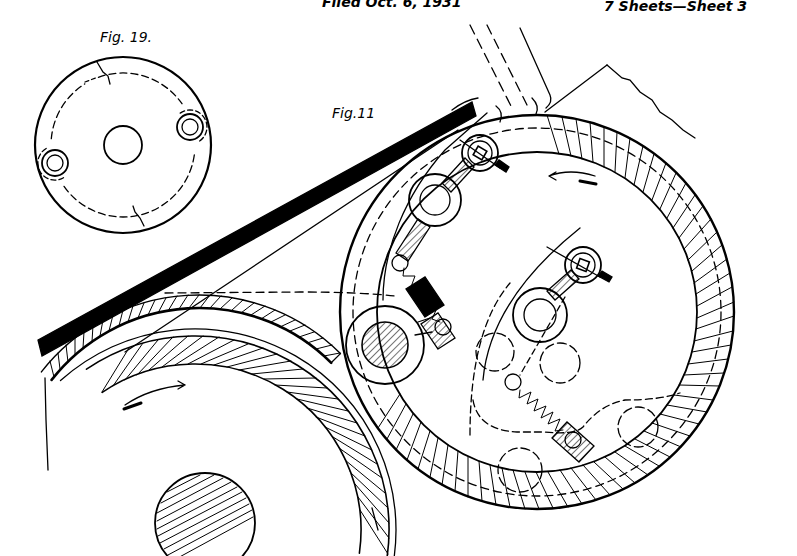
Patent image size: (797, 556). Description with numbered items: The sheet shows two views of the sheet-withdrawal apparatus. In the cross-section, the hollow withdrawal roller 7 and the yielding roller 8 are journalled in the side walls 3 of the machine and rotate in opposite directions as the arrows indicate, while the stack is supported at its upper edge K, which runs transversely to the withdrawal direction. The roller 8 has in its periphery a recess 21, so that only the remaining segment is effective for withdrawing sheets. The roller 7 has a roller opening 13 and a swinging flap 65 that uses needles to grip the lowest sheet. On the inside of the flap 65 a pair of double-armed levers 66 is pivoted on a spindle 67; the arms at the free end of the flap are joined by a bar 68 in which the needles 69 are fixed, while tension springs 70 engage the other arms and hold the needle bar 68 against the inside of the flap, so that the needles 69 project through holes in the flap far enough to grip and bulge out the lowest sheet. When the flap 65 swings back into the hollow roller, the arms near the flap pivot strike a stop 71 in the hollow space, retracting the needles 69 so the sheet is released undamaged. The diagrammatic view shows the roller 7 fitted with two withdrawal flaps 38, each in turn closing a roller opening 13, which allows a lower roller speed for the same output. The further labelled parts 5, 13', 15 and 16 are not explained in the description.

In FIG. 11, the side walls of the machine 3 is at (656, 110).
In FIG. 11, the support plate 5 is at (541, 94).
In FIG. 19, the withdrawal roller 7 is at (180, 89).
In FIG. 11, the withdrawal roller 7 is at (707, 226).
In FIG. 11, the roller 8 is at (318, 412).
In FIG. 19, the roller opening 13 is at (118, 144).
In FIG. 11, the roller opening 13 is at (319, 236).
In FIG. 11, the belt end 13' is at (495, 106).
In FIG. 11, the guide rod 15 is at (531, 62).
In FIG. 11, the drum rim 16 is at (728, 295).
In FIG. 11, the recess 21 is at (397, 510).
In FIG. 19, the flap 38 is at (80, 78).
In FIG. 11, the swinging flap 65 is at (362, 242).
In FIG. 11, the pair of double-armed levers 66 is at (462, 210).
In FIG. 11, the spindle 67 is at (447, 214).
In FIG. 11, the needle bar 68 is at (484, 170).
In FIG. 11, the needles 69 is at (509, 163).
In FIG. 11, the tension springs 70 is at (436, 294).
In FIG. 11, the stop 71 is at (488, 332).
In FIG. 11, the upper edge of the stack K is at (478, 100).